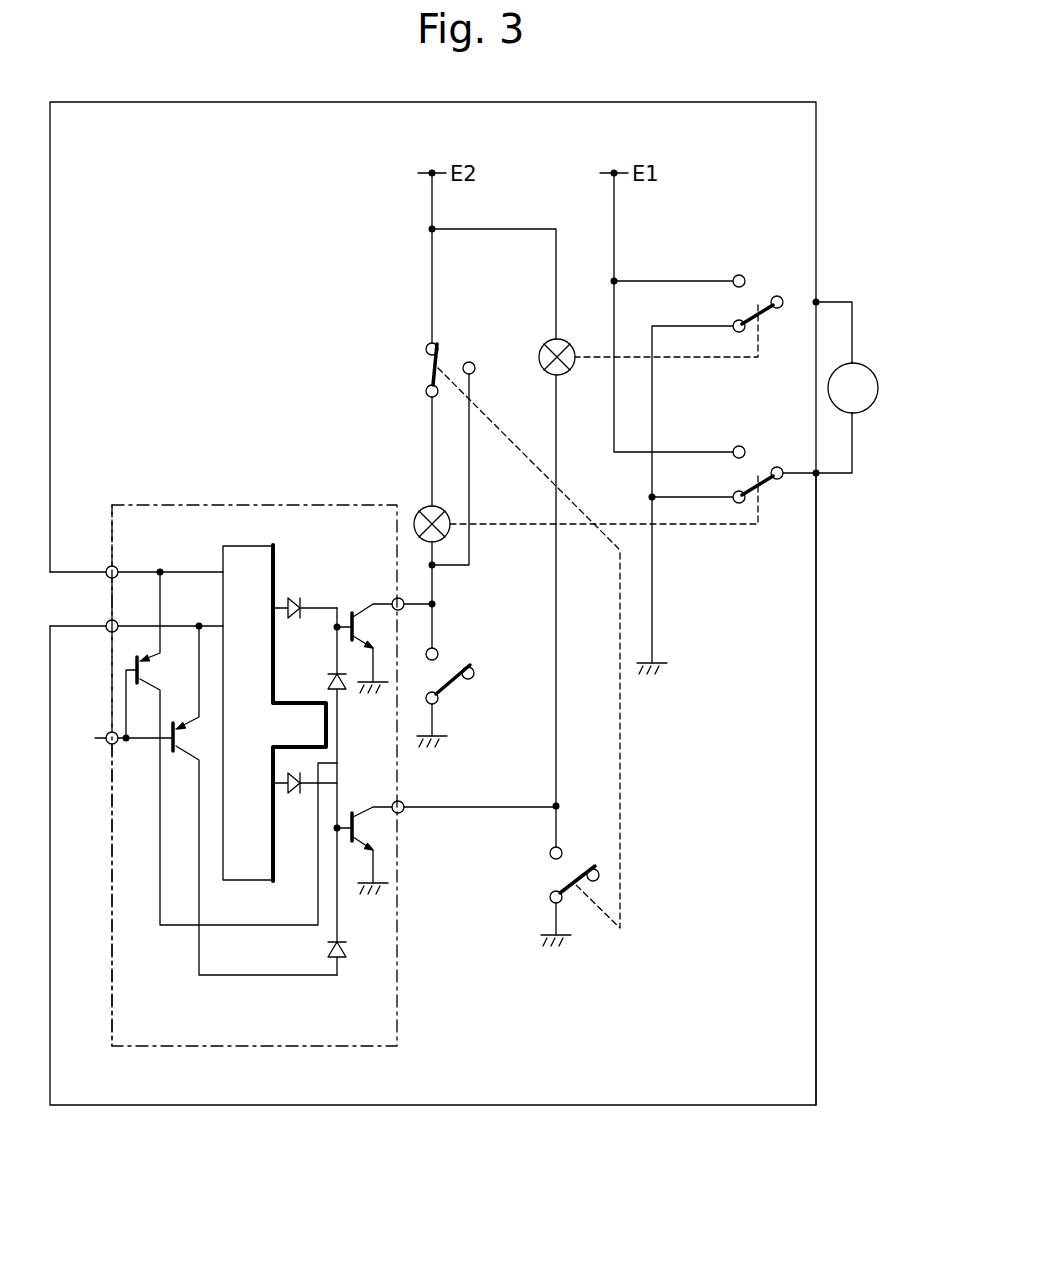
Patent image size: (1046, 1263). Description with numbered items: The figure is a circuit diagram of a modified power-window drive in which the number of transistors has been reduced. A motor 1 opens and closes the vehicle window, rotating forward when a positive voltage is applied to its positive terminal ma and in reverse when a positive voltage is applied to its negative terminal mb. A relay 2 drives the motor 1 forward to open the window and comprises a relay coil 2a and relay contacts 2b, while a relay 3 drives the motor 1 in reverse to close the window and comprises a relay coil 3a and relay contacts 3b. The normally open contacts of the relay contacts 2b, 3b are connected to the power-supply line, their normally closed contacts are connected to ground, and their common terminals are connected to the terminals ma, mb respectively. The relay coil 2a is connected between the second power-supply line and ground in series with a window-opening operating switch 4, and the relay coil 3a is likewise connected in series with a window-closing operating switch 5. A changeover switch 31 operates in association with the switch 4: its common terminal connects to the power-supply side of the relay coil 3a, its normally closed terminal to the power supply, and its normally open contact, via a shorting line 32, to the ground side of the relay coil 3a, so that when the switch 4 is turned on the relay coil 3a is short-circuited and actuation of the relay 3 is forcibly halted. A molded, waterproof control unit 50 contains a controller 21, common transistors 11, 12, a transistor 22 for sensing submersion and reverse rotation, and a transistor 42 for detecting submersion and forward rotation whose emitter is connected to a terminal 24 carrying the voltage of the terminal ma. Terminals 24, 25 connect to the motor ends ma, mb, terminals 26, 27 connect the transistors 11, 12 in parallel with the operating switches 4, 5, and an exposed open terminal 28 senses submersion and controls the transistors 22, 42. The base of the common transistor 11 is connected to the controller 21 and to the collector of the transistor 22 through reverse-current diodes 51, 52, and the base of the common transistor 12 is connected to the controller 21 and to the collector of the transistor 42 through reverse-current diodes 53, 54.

The motor 1 is at (880, 387).
The positive terminal of the motor ma is at (855, 364).
The negative terminal of the motor mb is at (855, 414).
The relay 2 is at (654, 299).
The relay coil 2a is at (545, 345).
The relay contacts 2b is at (760, 290).
The relay 3 is at (592, 470).
The relay coil 3a is at (421, 508).
The relay contacts 3b is at (760, 463).
The window-opening operating switch 4 is at (570, 895).
The window-closing operating switch 5 is at (452, 690).
The common transistor 11 is at (365, 807).
The common transistor 12 is at (363, 607).
The controller 21 is at (245, 545).
The transistor 22 is at (193, 762).
The terminal 24 is at (106, 566).
The terminal 25 is at (106, 634).
The terminal 26 is at (404, 813).
The terminal 27 is at (393, 600).
The open terminal 28 is at (106, 746).
The switch 31 is at (452, 357).
The shorting line 32 is at (470, 548).
The transistor 42 is at (143, 672).
The control unit 50 is at (277, 503).
The reverse-current diode 51 is at (302, 795).
The reverse-current diode 52 is at (328, 950).
The reverse-current diode 53 is at (297, 598).
The reverse-current diode 54 is at (328, 682).